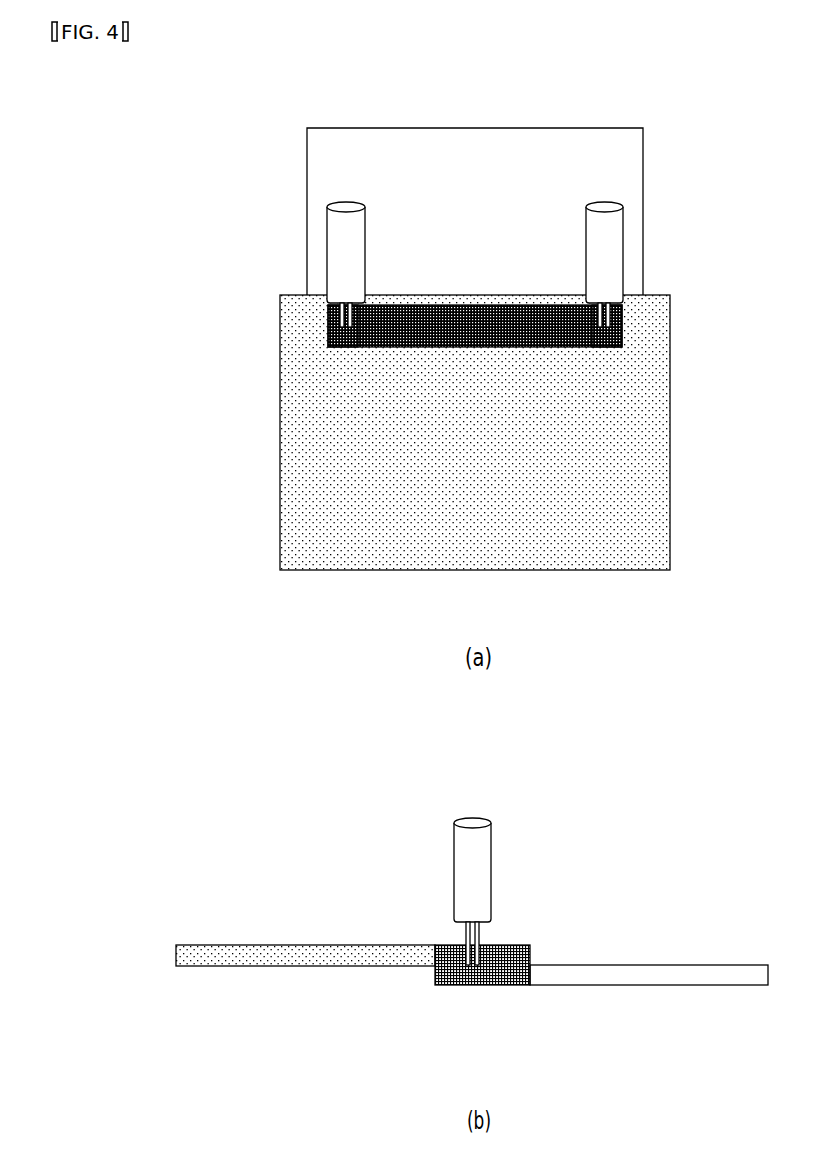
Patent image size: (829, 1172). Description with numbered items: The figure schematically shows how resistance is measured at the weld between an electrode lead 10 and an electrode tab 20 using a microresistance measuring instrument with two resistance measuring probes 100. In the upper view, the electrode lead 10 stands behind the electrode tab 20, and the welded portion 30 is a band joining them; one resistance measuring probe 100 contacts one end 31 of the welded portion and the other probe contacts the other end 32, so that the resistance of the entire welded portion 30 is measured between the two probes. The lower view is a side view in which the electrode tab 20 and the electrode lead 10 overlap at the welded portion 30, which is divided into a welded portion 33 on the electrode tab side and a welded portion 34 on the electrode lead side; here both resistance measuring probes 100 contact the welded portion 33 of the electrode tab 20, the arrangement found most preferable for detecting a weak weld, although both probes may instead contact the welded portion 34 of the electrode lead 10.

The electrode lead 10 is at (632, 161).
The electrode tab 20 is at (280, 437).
The welded portion 30 is at (493, 347).
The one end of the welded portion 31 is at (328, 330).
The other end of the welded portion 32 is at (622, 330).
The welded portion of the electrode tab 33 is at (507, 939).
The welded portion of the electrode lead 34 is at (468, 993).
The resistance measuring probe 100 is at (355, 245).